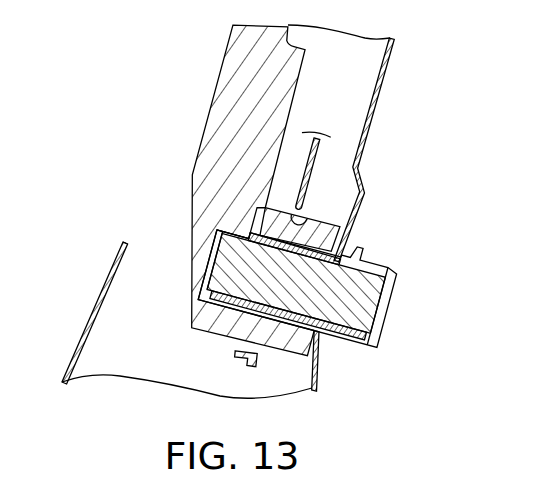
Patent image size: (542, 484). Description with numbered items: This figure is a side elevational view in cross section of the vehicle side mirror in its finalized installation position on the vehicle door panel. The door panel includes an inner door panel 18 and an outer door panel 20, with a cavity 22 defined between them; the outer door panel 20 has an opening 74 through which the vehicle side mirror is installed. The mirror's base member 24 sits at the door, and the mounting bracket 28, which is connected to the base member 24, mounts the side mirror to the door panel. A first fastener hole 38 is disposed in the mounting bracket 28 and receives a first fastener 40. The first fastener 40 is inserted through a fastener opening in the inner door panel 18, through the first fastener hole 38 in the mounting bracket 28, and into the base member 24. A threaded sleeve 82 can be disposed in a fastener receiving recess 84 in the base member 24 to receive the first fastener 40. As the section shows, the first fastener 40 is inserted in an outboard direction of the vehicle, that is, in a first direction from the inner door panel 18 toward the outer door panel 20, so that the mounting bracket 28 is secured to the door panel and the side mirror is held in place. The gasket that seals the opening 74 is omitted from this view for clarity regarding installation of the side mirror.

The inner door panel 18 is at (372, 118).
The outer door panel 20 is at (92, 310).
The cavity 22 is at (125, 350).
The base member 24 is at (212, 337).
The mounting bracket 28 is at (322, 157).
The first fastener hole 38 is at (322, 224).
The first fastener 40 is at (385, 260).
The opening 74 is at (125, 240).
The threaded sleeve 82 is at (280, 323).
The fastener receiving recess 84 is at (228, 226).